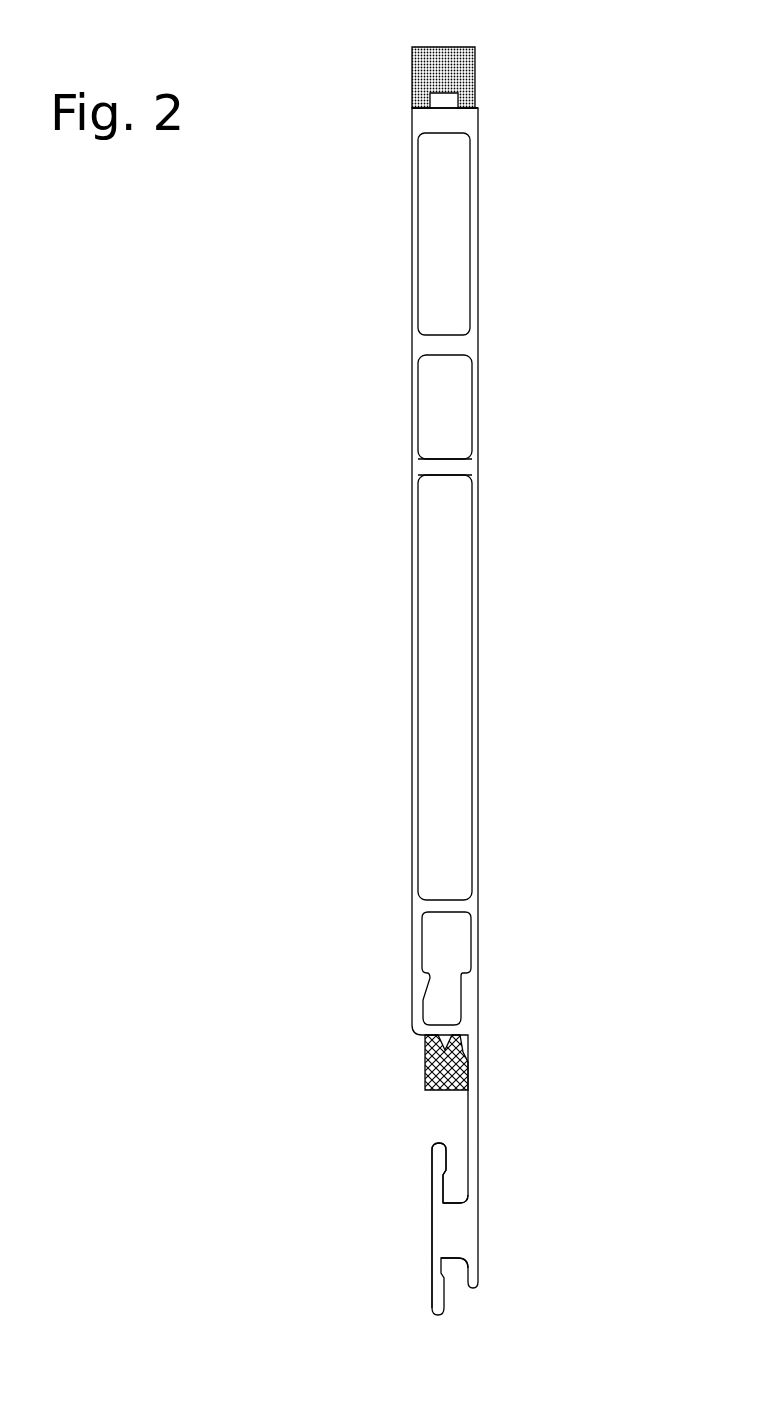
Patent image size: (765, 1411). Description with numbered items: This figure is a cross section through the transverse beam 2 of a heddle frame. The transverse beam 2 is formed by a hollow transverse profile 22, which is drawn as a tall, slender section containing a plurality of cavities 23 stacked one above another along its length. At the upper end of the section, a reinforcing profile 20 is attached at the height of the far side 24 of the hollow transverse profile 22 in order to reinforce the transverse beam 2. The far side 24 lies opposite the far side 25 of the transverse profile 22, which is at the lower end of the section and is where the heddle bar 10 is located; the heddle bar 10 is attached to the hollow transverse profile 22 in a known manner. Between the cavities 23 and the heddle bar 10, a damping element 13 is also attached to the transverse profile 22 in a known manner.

The transverse beam 2 is at (520, 503).
The reinforcing profile 20 is at (458, 78).
The far side 24 is at (422, 118).
The cavities 23 is at (448, 256).
The hollow transverse profile 22 is at (428, 468).
The damping element 13 is at (427, 1060).
The heddle bar 10 is at (440, 1162).
The far side 25 is at (458, 1242).